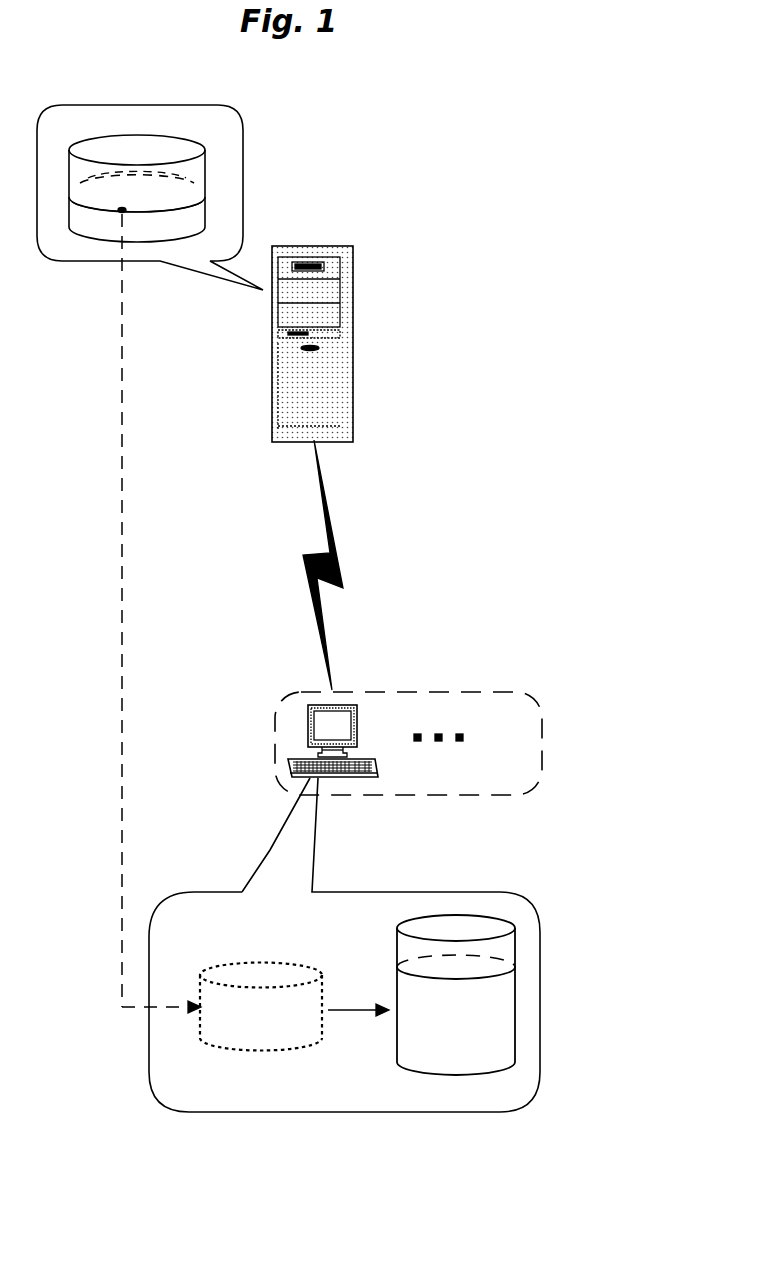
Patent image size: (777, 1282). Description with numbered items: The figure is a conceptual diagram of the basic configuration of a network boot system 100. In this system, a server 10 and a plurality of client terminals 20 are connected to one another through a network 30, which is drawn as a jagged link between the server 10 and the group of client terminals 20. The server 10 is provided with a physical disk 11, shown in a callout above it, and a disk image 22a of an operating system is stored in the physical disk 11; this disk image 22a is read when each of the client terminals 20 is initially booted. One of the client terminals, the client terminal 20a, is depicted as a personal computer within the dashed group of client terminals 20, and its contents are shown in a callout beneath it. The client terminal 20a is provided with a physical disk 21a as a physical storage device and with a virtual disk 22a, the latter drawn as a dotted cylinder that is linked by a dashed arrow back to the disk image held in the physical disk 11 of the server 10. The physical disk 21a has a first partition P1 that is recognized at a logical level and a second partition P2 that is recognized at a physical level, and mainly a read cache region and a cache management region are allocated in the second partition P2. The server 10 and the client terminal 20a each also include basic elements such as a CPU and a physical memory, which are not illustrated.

The physical disk 11 is at (116, 143).
The virtual disk 22a is at (120, 212).
The server 10 is at (353, 275).
The network 30 is at (343, 577).
The client terminals 20 is at (542, 732).
The client terminal 20a is at (356, 777).
The physical disk 21a is at (513, 929).
The first partition P1 is at (502, 952).
The second partition P2 is at (500, 1013).
The network boot system 100 is at (609, 1139).